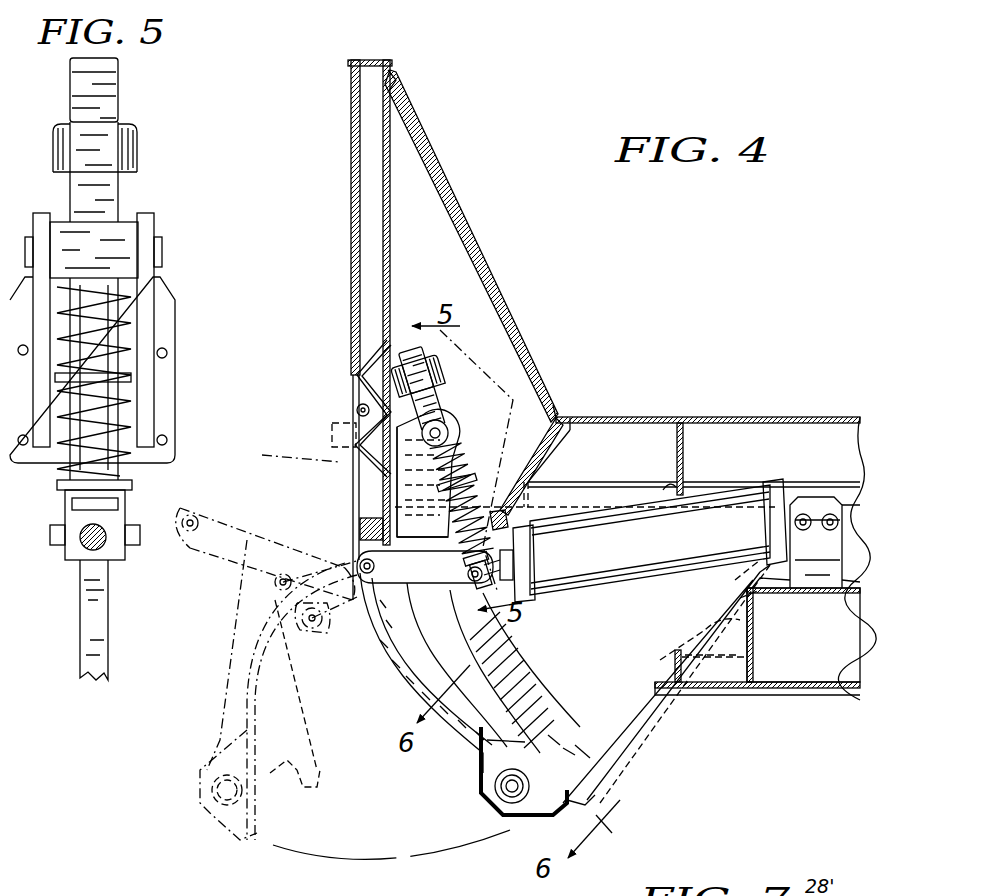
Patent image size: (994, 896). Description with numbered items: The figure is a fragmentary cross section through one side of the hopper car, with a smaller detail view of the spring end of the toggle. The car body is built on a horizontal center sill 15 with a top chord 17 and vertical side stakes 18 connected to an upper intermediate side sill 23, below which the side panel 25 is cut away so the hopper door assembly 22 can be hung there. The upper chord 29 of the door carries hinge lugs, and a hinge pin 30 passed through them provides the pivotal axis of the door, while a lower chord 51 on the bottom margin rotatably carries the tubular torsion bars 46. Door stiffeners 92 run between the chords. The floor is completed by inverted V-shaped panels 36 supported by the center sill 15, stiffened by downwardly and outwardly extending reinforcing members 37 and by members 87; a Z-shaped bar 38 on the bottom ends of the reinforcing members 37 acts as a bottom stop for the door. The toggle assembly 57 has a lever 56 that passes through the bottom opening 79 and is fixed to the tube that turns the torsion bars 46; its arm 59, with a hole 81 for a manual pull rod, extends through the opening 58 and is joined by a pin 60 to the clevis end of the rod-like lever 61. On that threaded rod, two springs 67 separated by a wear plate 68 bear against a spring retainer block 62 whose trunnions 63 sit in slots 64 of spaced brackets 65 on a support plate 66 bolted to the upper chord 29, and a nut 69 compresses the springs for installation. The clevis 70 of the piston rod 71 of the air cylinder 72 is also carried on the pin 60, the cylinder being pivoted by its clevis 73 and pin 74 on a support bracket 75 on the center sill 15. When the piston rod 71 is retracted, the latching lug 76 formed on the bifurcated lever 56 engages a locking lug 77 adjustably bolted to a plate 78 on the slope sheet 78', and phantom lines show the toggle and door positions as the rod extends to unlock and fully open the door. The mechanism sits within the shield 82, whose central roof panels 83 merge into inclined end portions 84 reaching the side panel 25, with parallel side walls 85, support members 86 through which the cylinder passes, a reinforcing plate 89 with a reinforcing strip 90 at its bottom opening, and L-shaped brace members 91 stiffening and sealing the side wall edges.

In FIG. 4, the center sill 15 is at (753, 630).
In FIG. 4, the top chord 17 is at (370, 60).
In FIG. 4, the side stakes 18 is at (351, 186).
In FIG. 4, the hopper door assembly 22 is at (372, 662).
In FIG. 4, the upper intermediate side sill 23 is at (352, 380).
In FIG. 4, the side panel 25 is at (392, 140).
In FIG. 4, the upper chord 29 is at (352, 460).
In FIG. 4, the hinge pin 30 is at (356, 407).
In FIG. 4, the inverted V-shaped panels 36 is at (662, 642).
In FIG. 4, the reinforcing members 37 is at (660, 750).
In FIG. 4, the Z-shaped bar 38 is at (590, 808).
In FIG. 4, the torsion bars 46 is at (495, 786).
In FIG. 4, the lower chord 51 is at (485, 800).
In FIG. 5, the lever 56 is at (82, 648).
In FIG. 4, the lever 56 is at (530, 685).
In FIG. 4, the toggle assembly 57 is at (500, 440).
In FIG. 4, the opening 58 is at (385, 625).
In FIG. 4, the arm 59 is at (210, 560).
In FIG. 4, the pin 60 is at (445, 562).
In FIG. 5, the lever 61 is at (120, 70).
In FIG. 4, the lever 61 is at (455, 452).
In FIG. 5, the spring retainer block 62 is at (138, 226).
In FIG. 5, the trunnions 63 is at (26, 240).
In FIG. 4, the trunnions 63 is at (445, 430).
In FIG. 4, the slots 64 is at (448, 440).
In FIG. 5, the brackets 65 is at (160, 306).
In FIG. 4, the brackets 65 is at (440, 420).
In FIG. 5, the support plate 66 is at (165, 378).
In FIG. 5, the springs 67 is at (130, 334).
In FIG. 4, the springs 67 is at (462, 470).
In FIG. 5, the wear plate 68 is at (131, 378).
In FIG. 4, the wear plate 68 is at (670, 480).
In FIG. 5, the nut 69 is at (137, 140).
In FIG. 4, the nut 69 is at (435, 368).
In FIG. 5, the clevis 70 is at (115, 518).
In FIG. 4, the clevis 70 is at (540, 588).
In FIG. 5, the piston rod 71 is at (100, 548).
In FIG. 4, the piston rod 71 is at (526, 563).
In FIG. 4, the air cylinder 72 is at (668, 540).
In FIG. 4, the clevis 73 is at (795, 515).
In FIG. 4, the pin 74 is at (828, 513).
In FIG. 4, the support bracket 75 is at (825, 565).
In FIG. 4, the latching lug 76 is at (572, 740).
In FIG. 4, the locking lug 77 is at (560, 710).
In FIG. 4, the plate 78 is at (597, 718).
In FIG. 4, the slope sheet 78' is at (685, 684).
In FIG. 4, the bottom opening 79 is at (487, 742).
In FIG. 4, the hole 81 is at (200, 518).
In FIG. 4, the shield 82 is at (640, 350).
In FIG. 4, the roof panels 83 is at (725, 424).
In FIG. 4, the inclined end portions 84 is at (480, 250).
In FIG. 4, the side walls 85 is at (652, 616).
In FIG. 4, the support members 86 is at (684, 441).
In FIG. 4, the members 87 is at (787, 690).
In FIG. 4, the reinforcing plate 89 is at (565, 440).
In FIG. 4, the reinforcing strip 90 is at (512, 515).
In FIG. 4, the L-shaped brace members 91 is at (470, 700).
In FIG. 4, the door stiffeners 92 is at (510, 722).